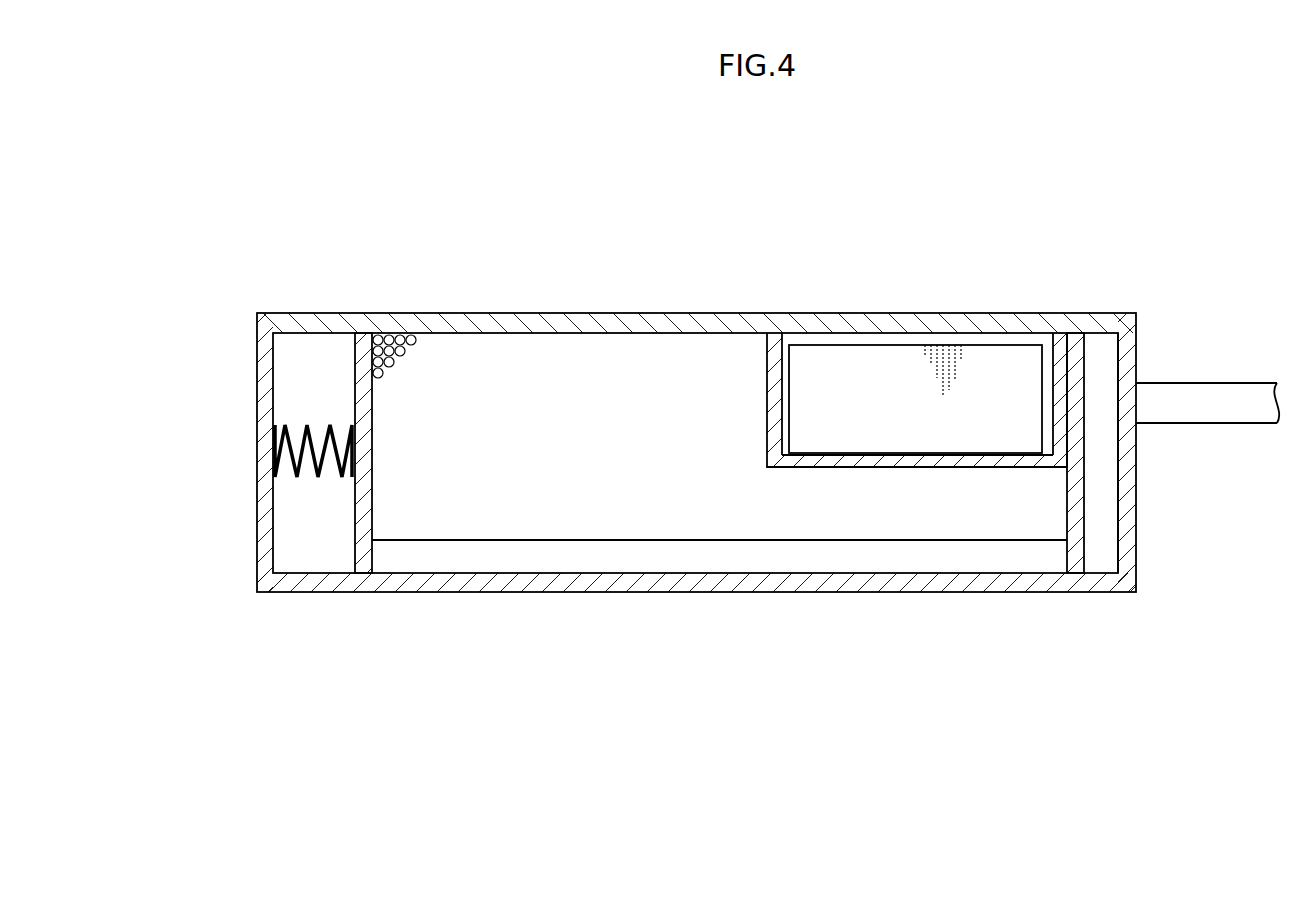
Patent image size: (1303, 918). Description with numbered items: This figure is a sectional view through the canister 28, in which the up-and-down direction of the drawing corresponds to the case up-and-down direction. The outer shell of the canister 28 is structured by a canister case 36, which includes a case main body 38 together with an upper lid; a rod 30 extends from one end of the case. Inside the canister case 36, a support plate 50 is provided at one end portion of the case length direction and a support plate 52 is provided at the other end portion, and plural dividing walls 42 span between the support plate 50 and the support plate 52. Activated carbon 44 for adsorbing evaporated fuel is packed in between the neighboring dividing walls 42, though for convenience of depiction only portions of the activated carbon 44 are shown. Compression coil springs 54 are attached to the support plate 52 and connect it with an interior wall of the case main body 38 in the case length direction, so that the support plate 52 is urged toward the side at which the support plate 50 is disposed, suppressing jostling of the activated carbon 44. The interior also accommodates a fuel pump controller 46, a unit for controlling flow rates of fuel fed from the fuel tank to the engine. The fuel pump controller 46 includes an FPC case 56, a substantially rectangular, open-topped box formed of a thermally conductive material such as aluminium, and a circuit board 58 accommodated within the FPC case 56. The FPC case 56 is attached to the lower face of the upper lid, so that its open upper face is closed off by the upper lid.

The canister 28 is at (773, 238).
The rod 30 is at (1222, 383).
The canister case 36 is at (667, 282).
The case main body 38 is at (1137, 362).
The dividing walls 42 is at (578, 522).
The activated carbon 44 is at (393, 348).
The fuel pump controller 46 is at (882, 467).
The support plate 50 is at (1086, 498).
The support plate 52 is at (353, 523).
The compression coil springs 54 is at (322, 418).
The FPC case 56 is at (857, 489).
The circuit board 58 is at (993, 345).